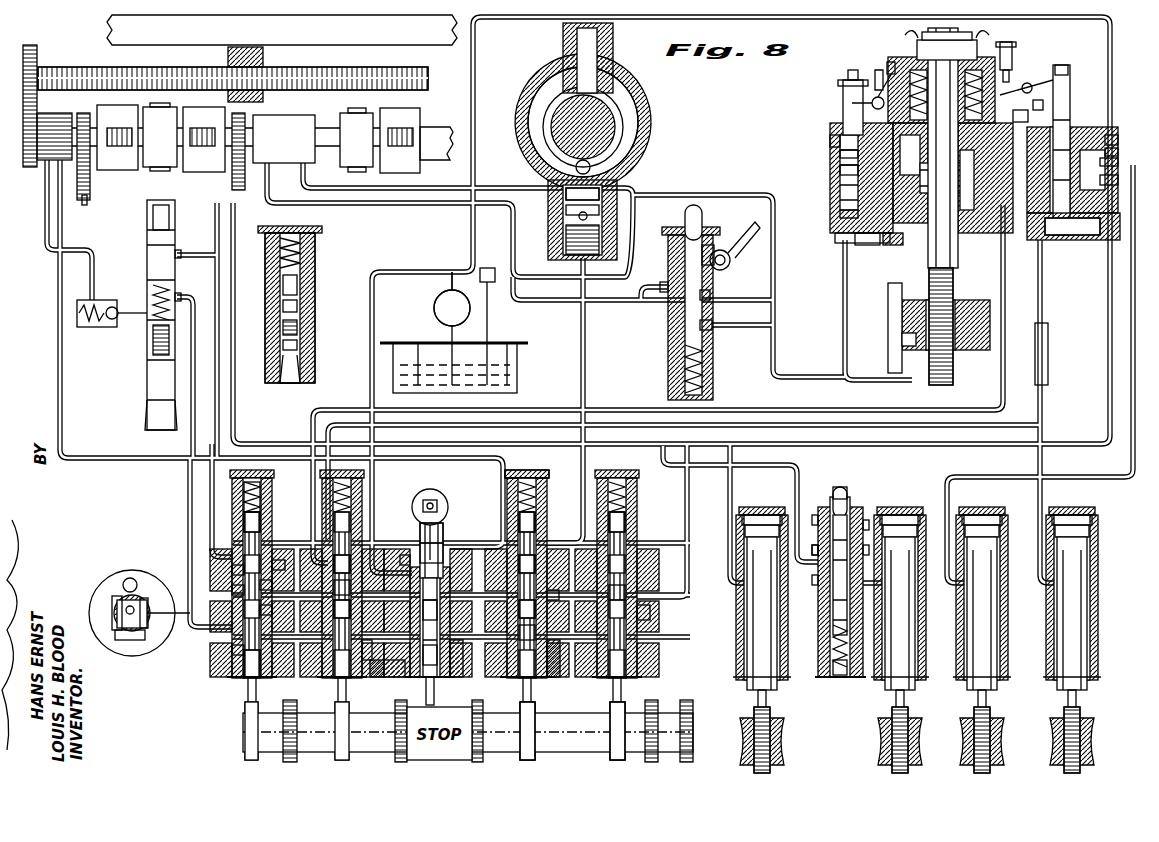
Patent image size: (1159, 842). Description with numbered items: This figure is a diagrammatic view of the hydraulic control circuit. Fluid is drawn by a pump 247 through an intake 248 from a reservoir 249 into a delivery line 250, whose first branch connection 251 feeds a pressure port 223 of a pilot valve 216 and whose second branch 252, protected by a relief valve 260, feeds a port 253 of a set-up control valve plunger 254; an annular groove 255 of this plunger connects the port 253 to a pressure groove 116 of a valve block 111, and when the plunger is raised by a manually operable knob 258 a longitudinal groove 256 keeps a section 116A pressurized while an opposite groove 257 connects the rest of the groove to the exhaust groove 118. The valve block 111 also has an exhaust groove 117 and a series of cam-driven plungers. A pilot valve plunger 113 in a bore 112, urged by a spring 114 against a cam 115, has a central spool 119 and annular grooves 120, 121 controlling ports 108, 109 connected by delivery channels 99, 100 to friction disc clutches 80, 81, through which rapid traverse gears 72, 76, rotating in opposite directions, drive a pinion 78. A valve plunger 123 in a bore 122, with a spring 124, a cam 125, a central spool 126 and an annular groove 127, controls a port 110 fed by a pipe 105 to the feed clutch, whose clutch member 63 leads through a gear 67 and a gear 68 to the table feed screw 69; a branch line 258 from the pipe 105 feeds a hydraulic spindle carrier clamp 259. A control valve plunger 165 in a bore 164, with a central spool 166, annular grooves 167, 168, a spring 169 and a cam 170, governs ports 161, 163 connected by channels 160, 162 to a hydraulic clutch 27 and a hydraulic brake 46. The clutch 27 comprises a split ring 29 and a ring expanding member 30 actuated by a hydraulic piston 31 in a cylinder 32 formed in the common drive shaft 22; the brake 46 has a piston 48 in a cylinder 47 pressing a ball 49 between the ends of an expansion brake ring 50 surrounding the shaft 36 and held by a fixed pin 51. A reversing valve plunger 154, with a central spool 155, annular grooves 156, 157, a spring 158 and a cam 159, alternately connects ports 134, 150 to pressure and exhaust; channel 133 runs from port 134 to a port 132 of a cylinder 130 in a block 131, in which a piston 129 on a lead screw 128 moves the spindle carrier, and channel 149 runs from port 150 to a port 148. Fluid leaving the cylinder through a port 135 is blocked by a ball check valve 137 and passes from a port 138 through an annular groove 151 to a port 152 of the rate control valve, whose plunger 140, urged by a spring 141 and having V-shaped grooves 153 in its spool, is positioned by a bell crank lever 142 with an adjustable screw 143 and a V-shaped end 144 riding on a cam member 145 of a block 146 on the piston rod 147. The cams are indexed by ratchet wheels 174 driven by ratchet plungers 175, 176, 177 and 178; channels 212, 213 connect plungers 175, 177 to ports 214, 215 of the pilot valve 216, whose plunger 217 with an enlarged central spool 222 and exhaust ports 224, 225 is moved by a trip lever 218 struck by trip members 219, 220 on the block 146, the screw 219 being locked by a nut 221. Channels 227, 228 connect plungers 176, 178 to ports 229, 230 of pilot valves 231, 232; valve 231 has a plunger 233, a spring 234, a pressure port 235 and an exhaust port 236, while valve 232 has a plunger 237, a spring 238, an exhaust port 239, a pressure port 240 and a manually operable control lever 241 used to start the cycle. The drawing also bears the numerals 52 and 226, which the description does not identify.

The common drive shaft 22 is at (125, 630).
The hydraulic clutch 27 is at (115, 582).
The split ring 29 is at (160, 645).
The ring expanding member 30 is at (130, 578).
The hydraulic piston 31 is at (146, 598).
The cylinder 32 is at (115, 605).
The shaft 36 is at (600, 128).
The hydraulic brake 46 is at (625, 80).
The cylinder 47 is at (566, 235).
The piston 48 is at (600, 192).
The ball 49 is at (592, 165).
The expansion brake ring 50 is at (620, 115).
The fixed pin 51 is at (587, 47).
The pump casing 52 is at (548, 150).
The clutch member 63 is at (422, 115).
The gear 67 is at (27, 167).
The gear 68 is at (31, 45).
The table feed screw 69 is at (96, 67).
The gear 72 is at (232, 185).
The gear 76 is at (88, 186).
The pinion 78 is at (246, 115).
The friction disc clutch 80 is at (192, 160).
The friction disc clutch 81 is at (122, 198).
The delivery channel 99 is at (62, 225).
The delivery channel 100 is at (510, 446).
The pipe 105 is at (372, 190).
The port 108 is at (515, 650).
The port 109 is at (480, 595).
The port 110 is at (605, 660).
The valve block 111 is at (520, 684).
The bore 112 is at (521, 530).
The pilot valve plunger 113 is at (537, 495).
The spring 114 is at (545, 475).
The cam 115 is at (522, 762).
The pressure groove 116 is at (548, 595).
The section of pressure groove 116A is at (378, 650).
The exhaust groove 117 is at (410, 560).
The exhaust groove 118 is at (405, 668).
The central spool 119 is at (537, 615).
The annular groove 120 is at (537, 565).
The annular groove 121 is at (540, 635).
The bore 122 is at (640, 615).
The valve plunger 123 is at (625, 535).
The spring 124 is at (619, 478).
The cam 125 is at (615, 762).
The central spool 126 is at (625, 595).
The annular groove 127 is at (640, 635).
The lead screw 128 is at (948, 300).
The piston 129 is at (965, 245).
The cylinder 130 is at (832, 138).
The block 131 is at (830, 200).
The port 132 is at (1015, 120).
The channel 133 is at (1003, 383).
The port 134 is at (325, 565).
The port 135 is at (925, 238).
The ball check valve 137 is at (890, 250).
The port 138 is at (830, 140).
The plunger 140 is at (845, 96).
The spring 141 is at (835, 236).
The bell crank lever 142 is at (876, 90).
The adjustable screw 143 is at (855, 90).
The V-shaped end 144 is at (882, 70).
The cam member 145 is at (900, 62).
The block 146 is at (1040, 87).
The piston rod 147 is at (958, 47).
The port 148 is at (860, 238).
The channel 149 is at (845, 285).
The port 150 is at (262, 640).
The annular groove 151 is at (840, 170).
The port 152 is at (840, 215).
The V-shaped grooves 153 is at (840, 155).
The reversing valve plunger 154 is at (338, 660).
The central spool 155 is at (350, 595).
The annular groove 156 is at (350, 575).
The annular groove 157 is at (350, 620).
The spring 158 is at (345, 492).
The cam 159 is at (340, 765).
The channel 160 is at (233, 627).
The port 161 is at (235, 590).
The channel 162 is at (398, 205).
The port 163 is at (240, 555).
The bore 164 is at (268, 610).
The control valve plunger 165 is at (258, 530).
The central spool 166 is at (270, 585).
The annular groove 167 is at (235, 570).
The annular groove 168 is at (237, 650).
The spring 169 is at (245, 490).
The cam 170 is at (250, 762).
The ratchet wheels 174 is at (764, 773).
The ratchet plunger 175 is at (782, 690).
The ratchet plunger 176 is at (920, 694).
The ratchet plunger 177 is at (1003, 694).
The ratchet plunger 178 is at (1092, 694).
The channel 212 is at (1110, 410).
The channel 213 is at (1133, 383).
The port 214 is at (1085, 240).
The port 215 is at (1112, 148).
The pilot valve 216 is at (1075, 130).
The plunger 217 is at (1070, 95).
The trip lever 218 is at (1060, 72).
The trip member 219 is at (1014, 45).
The trip member 220 is at (1043, 105).
The nut 221 is at (1012, 60).
The central spool 222 is at (1108, 160).
The pressure port 223 is at (1098, 180).
The exhaust port 224 is at (1112, 135).
The exhaust port 225 is at (1070, 245).
The cap 226 is at (980, 40).
The channel 227 is at (838, 670).
The channel 228 is at (1045, 500).
The port 229 is at (870, 560).
The port 230 is at (712, 288).
The pilot valve 231 is at (835, 492).
The pilot valve 232 is at (668, 250).
The plunger 233 is at (846, 490).
The spring 234 is at (840, 680).
The pressure port 235 is at (820, 585).
The exhaust port 236 is at (820, 560).
The plunger 237 is at (703, 218).
The spring 238 is at (668, 360).
The exhaust port 239 is at (668, 300).
The pressure port 240 is at (712, 330).
The manually operable control lever 241 is at (732, 258).
The pump 247 is at (434, 305).
The intake 248 is at (437, 318).
The reservoir 249 is at (510, 343).
The delivery line 250 is at (453, 288).
The first branch connection 251 is at (476, 245).
The second branch 252 is at (371, 380).
The port 253 is at (425, 545).
The set-up control valve plunger 254 is at (430, 530).
The annular groove 255 is at (440, 540).
The longitudinally extending groove 256 is at (437, 615).
The second longitudinal groove 257 is at (437, 655).
The manually operable knob 258 is at (435, 495).
The hydraulic spindle carrier clamp 259 is at (902, 340).
The relief valve 260 is at (316, 290).